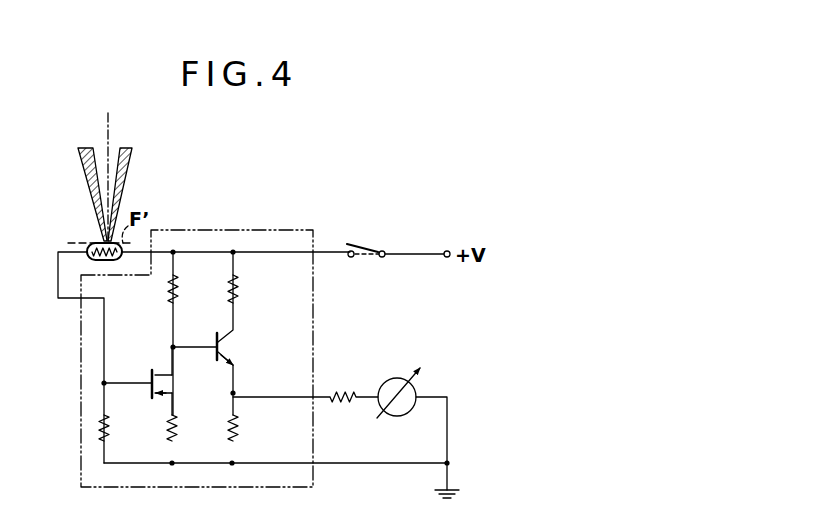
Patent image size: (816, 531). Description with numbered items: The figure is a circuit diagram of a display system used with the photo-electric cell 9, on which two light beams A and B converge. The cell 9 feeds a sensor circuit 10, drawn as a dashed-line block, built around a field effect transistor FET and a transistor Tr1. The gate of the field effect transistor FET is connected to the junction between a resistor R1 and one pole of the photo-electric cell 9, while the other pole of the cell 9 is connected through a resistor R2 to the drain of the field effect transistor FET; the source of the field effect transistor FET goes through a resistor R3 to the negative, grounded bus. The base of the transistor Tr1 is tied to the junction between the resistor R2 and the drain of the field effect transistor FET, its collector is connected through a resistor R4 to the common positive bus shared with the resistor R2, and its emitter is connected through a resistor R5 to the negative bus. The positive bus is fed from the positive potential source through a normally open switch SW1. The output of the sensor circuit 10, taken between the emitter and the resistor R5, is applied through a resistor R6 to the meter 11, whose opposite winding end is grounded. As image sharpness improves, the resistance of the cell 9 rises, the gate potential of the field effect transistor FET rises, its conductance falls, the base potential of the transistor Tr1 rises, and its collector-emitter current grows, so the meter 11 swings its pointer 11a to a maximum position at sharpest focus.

The photo-electric cell 9 is at (92, 246).
The sensor circuit 10 is at (259, 232).
The meter 11 is at (405, 411).
The pointer 11a is at (407, 371).
The light beam A is at (86, 181).
The light beam B is at (125, 181).
The normally open switch SW1 is at (366, 246).
The field effect transistor FET is at (168, 386).
The transistor Tr1 is at (228, 350).
The resistor R1 is at (117, 429).
The resistor R2 is at (186, 289).
The resistor R3 is at (185, 429).
The resistor R4 is at (246, 289).
The resistor R5 is at (246, 429).
The resistor R6 is at (305, 385).